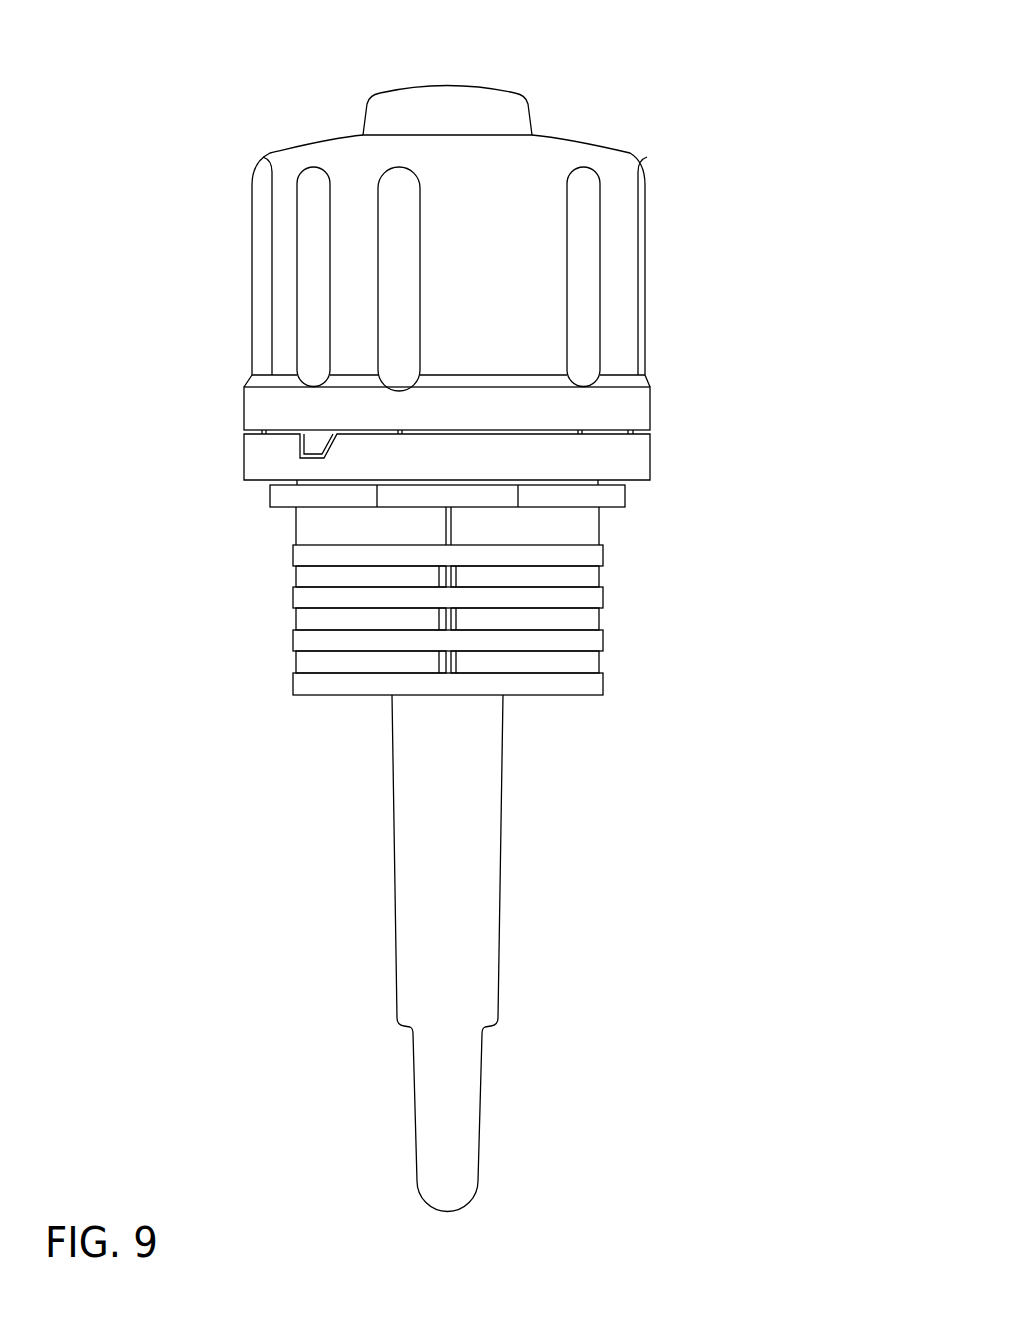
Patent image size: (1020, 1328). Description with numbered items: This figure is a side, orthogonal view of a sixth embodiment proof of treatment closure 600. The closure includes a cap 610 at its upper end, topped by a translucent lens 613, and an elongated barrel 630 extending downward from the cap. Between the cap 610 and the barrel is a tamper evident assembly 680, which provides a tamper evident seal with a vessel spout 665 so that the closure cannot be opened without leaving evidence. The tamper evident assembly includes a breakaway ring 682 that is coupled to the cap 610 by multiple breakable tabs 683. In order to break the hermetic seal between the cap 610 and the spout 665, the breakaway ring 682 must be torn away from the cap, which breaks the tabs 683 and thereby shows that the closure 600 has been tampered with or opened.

The proof of treatment closure 600 is at (788, 115).
The cap 610 is at (633, 164).
The translucent lens 613 is at (490, 88).
The barrel 630 is at (500, 897).
The vessel spout 665 is at (603, 553).
The tamper evident assembly 680 is at (670, 387).
The breakaway ring 682 is at (244, 453).
The breakable tabs 683 is at (263, 430).